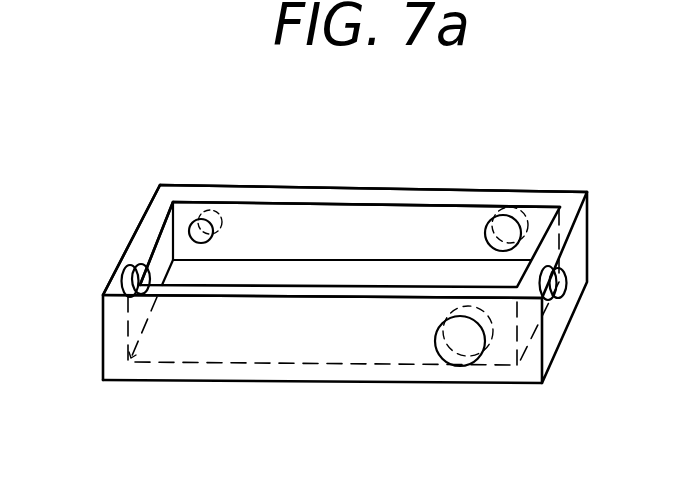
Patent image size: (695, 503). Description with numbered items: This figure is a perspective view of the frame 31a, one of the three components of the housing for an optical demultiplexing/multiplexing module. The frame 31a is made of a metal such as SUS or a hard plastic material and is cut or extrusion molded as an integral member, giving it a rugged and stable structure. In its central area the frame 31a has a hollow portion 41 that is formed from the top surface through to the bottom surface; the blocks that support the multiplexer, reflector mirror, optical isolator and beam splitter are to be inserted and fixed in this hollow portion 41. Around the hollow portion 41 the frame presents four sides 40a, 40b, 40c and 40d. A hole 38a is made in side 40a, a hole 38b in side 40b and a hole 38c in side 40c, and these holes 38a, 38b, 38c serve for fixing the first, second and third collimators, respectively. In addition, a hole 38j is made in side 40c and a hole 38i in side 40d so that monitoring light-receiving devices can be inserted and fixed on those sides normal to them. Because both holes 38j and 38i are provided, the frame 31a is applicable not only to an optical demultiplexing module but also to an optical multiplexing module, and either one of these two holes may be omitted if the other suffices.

The frame 31a is at (570, 200).
The side 40a is at (133, 238).
The side 40b is at (552, 332).
The side 40c is at (335, 188).
The side 40d is at (298, 348).
The hollow portion 41 is at (412, 225).
The hole 38a is at (128, 277).
The hole 38b is at (562, 290).
The hole 38c is at (203, 231).
The hole 38i is at (457, 366).
The hole 38j is at (520, 207).